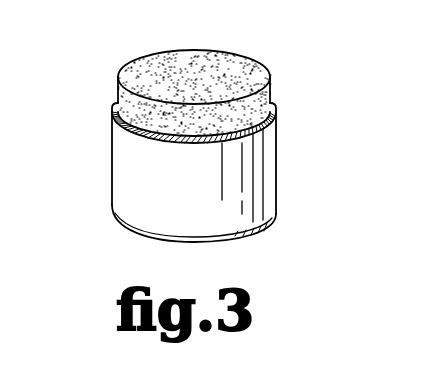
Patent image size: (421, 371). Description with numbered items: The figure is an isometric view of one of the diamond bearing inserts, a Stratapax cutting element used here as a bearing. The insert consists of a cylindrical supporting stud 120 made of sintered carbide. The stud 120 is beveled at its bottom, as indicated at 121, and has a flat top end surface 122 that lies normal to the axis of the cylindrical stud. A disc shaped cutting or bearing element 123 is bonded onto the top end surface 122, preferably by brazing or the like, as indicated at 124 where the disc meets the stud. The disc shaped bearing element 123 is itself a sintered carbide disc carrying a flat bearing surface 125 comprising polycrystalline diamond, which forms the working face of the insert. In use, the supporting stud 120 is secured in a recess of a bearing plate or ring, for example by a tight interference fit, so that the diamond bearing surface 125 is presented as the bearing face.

The cylindrical supporting stud 120 is at (132, 172).
The bevel 121 is at (217, 233).
The flat top end surface 122 is at (274, 143).
The disc shaped bearing element 123 is at (270, 100).
The brazing 124 is at (113, 116).
The flat bearing surface 125 is at (162, 62).